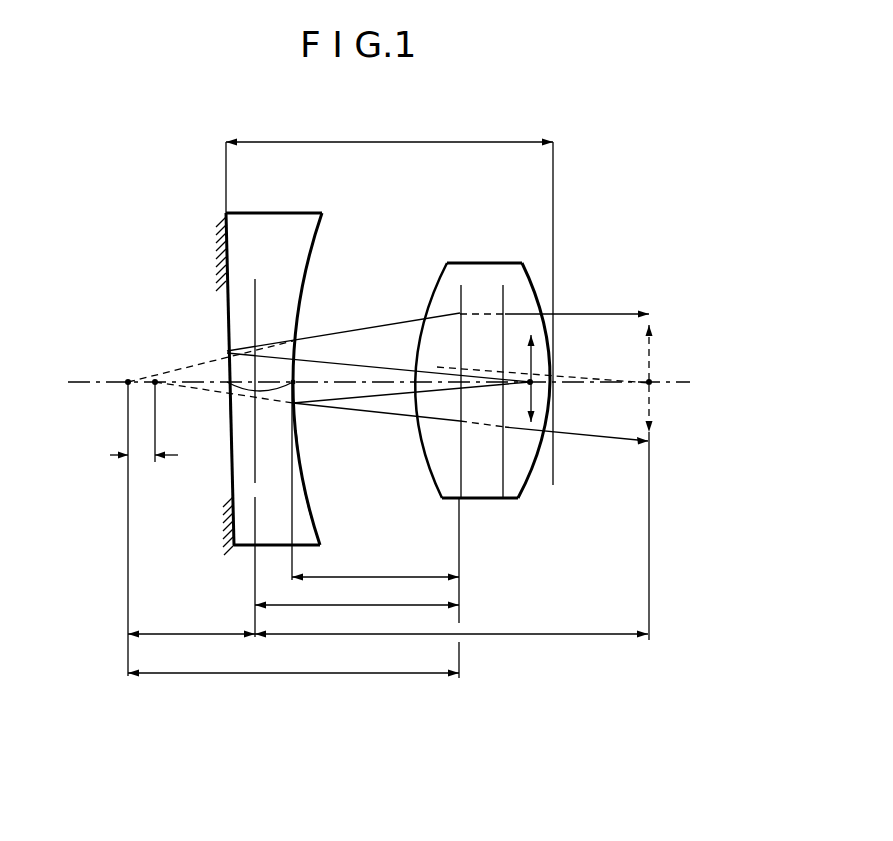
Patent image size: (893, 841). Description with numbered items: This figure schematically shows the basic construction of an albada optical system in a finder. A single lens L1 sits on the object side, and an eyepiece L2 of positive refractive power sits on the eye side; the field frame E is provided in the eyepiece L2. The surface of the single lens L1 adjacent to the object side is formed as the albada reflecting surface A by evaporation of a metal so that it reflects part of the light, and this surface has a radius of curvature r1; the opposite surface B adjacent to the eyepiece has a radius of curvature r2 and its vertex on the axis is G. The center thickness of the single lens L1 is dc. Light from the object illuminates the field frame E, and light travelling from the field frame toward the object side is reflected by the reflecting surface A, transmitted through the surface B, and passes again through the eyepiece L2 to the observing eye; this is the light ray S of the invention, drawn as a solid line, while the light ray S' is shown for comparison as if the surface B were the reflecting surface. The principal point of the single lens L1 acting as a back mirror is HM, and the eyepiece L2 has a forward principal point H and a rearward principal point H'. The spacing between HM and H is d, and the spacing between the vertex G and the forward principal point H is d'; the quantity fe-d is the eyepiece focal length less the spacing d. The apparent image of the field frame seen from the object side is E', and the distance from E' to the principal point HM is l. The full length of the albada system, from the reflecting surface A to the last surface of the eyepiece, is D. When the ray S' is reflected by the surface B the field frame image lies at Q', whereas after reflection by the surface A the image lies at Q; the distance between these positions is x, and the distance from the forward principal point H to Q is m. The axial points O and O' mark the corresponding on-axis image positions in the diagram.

The full length of the albada optical system D is at (393, 141).
The single lens L1 is at (282, 220).
The radius of curvature of object-side surface r1 is at (226, 249).
The radius of curvature of eyepiece-side surface r2 is at (320, 230).
The reflecting surface A is at (229, 461).
The surface adjacent to the eyepiece B is at (300, 472).
The principal point of the single lens HM is at (257, 293).
The center thickness of the single lens dc is at (265, 390).
The vertex of the eyepiece-side surface G is at (292, 382).
The eyepiece L2 is at (475, 260).
The forward principal point of the eyepiece H is at (430, 369).
The rearward principal point of the eyepiece H' is at (521, 364).
The position of the field frame image after reflection by surface A Q is at (205, 507).
The position of the field frame image after reflection by surface B Q' is at (222, 420).
The distance between image positions x is at (142, 457).
The light ray S is at (554, 300).
The comparison light ray S' is at (470, 436).
The intermediate image point on axis O is at (552, 398).
The final image point on axis O' is at (668, 399).
The field frame E is at (519, 370).
The apparent field frame image E' is at (668, 375).
The spacing between vertex G and forward principal point d' is at (375, 481).
The spacing between principal points d is at (357, 567).
The eyepiece focal length minus spacing d fe-d is at (193, 632).
The distance from apparent field frame image to principal point l is at (494, 632).
The distance from forward principal point to image position Q m is at (325, 670).